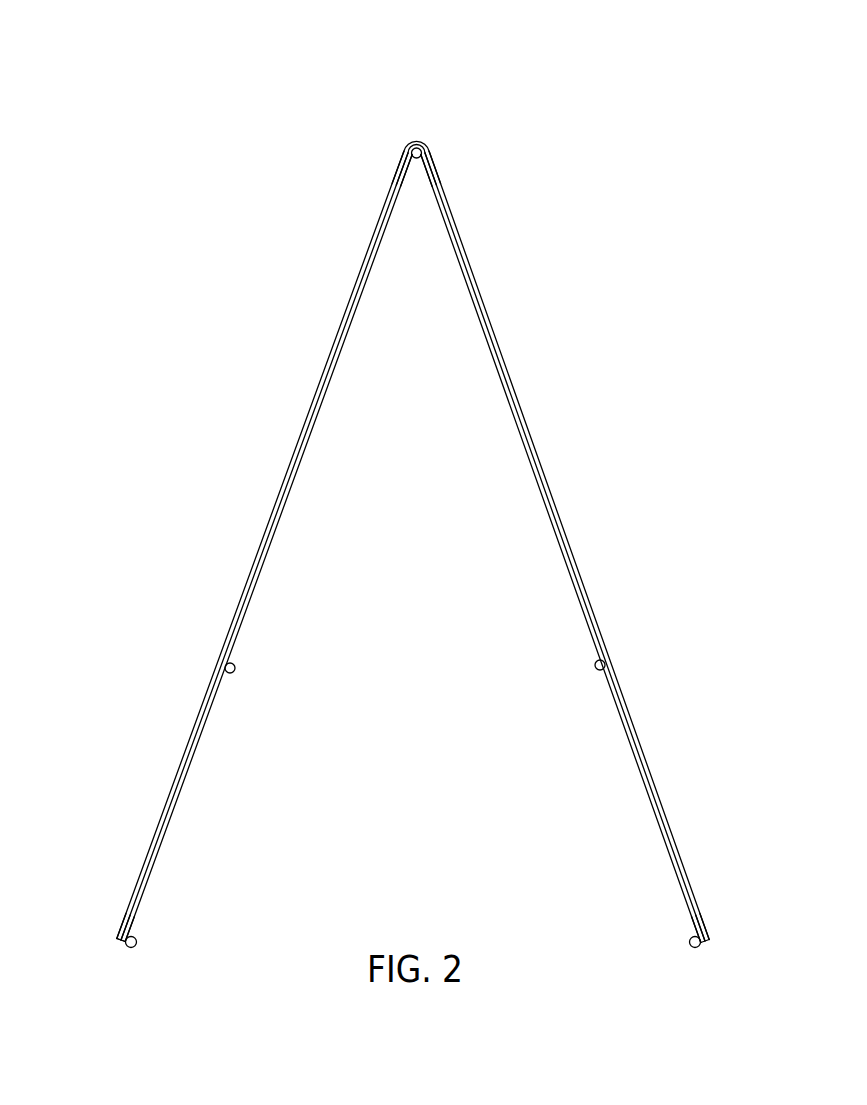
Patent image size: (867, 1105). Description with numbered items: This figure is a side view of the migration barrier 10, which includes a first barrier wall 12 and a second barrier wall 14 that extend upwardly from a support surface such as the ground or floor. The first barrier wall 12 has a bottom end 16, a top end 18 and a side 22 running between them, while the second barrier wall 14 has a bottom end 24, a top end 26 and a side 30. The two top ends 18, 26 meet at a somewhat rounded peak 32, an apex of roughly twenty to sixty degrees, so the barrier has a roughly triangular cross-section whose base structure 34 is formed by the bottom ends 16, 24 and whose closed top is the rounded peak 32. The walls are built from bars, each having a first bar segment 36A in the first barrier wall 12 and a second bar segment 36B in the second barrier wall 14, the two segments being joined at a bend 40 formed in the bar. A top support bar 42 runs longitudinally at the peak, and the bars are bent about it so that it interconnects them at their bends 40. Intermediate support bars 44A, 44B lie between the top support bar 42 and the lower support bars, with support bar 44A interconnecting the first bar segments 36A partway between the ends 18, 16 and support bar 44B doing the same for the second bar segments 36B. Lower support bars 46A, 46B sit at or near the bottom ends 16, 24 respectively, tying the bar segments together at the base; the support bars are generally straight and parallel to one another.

The migration barrier 10 is at (650, 100).
The first barrier wall 12 is at (268, 462).
The second barrier wall 14 is at (617, 440).
The bottom end 16 is at (118, 930).
The top end 18 is at (398, 173).
The side 22 is at (257, 584).
The bottom end 24 is at (702, 908).
The top end 26 is at (433, 160).
The side 30 is at (583, 582).
The rounded peak 32 is at (418, 138).
The base structure 34 is at (132, 975).
The first bar segment 36A is at (325, 365).
The second bar segment 36B is at (512, 375).
The bend 40 is at (406, 145).
The support bar 42 is at (418, 160).
The support bar 44A is at (236, 672).
The support bar 44B is at (595, 669).
The support bar 46A is at (138, 938).
The support bar 46B is at (690, 945).